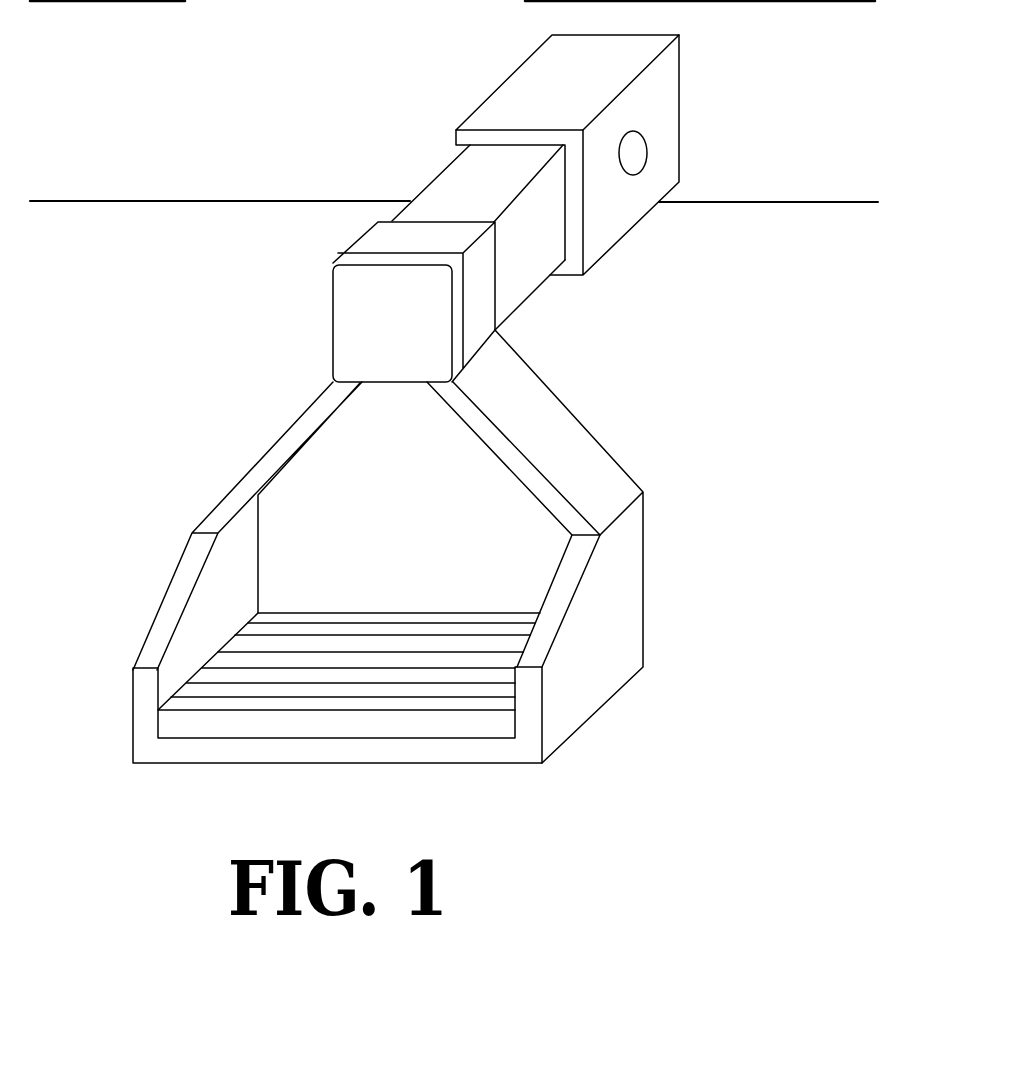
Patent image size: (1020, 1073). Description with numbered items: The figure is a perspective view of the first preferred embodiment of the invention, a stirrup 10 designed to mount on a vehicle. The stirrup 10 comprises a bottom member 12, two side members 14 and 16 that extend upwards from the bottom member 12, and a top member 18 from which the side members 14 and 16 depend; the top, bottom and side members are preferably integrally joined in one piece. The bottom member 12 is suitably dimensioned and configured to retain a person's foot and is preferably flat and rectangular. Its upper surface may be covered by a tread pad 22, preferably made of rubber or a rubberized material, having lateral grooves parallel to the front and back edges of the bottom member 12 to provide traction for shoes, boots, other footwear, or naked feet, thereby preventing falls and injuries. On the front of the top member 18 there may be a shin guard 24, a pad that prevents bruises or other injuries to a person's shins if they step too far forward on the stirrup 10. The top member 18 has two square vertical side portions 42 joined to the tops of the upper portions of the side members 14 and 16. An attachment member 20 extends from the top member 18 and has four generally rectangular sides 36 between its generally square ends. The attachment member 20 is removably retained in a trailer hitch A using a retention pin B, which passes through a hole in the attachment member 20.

The stirrup 10 is at (643, 667).
The bottom member 12 is at (237, 767).
The side member 14 is at (192, 533).
The side member 16 is at (643, 492).
The top member 18 is at (363, 237).
The attachment member 20 is at (427, 185).
The tread pad 22 is at (393, 613).
The shin guard 24 is at (333, 315).
The rectangular sides 36 is at (447, 167).
The vertical side portions 42 is at (367, 230).
The trailer hitch A is at (635, 227).
The retention pin B is at (649, 145).